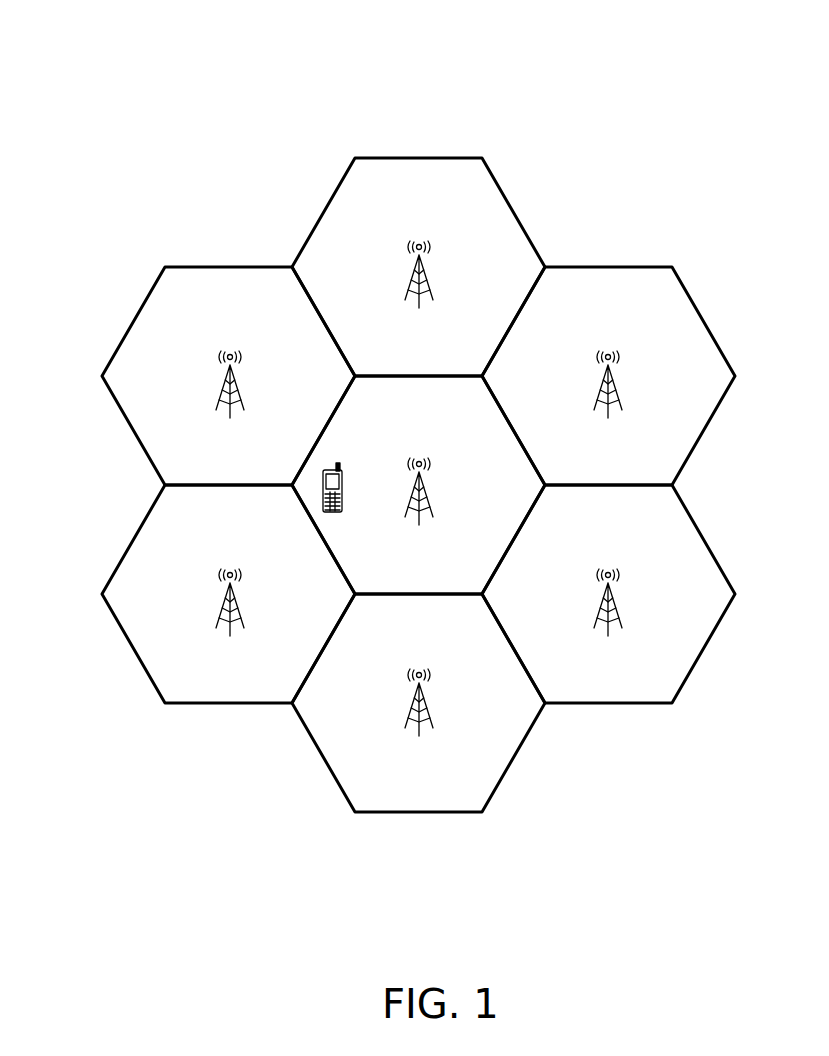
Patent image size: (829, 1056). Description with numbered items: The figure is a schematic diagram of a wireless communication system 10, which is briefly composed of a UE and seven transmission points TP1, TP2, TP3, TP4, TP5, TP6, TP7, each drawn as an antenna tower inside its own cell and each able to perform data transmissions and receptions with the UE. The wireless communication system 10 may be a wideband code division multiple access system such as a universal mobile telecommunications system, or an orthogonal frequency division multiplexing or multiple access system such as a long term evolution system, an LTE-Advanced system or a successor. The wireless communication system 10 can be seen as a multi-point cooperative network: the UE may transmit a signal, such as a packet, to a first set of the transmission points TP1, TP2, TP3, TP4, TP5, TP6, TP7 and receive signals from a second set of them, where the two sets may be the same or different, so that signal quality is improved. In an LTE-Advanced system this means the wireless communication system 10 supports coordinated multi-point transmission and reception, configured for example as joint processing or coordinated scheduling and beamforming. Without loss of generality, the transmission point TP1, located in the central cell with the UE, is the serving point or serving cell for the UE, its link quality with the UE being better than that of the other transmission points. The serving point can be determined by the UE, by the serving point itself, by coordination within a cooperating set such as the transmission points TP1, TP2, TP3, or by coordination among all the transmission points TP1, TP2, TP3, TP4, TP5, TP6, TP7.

The wireless communication system 10 is at (656, 82).
The transmission point TP1 is at (430, 505).
The transmission point TP2 is at (222, 383).
The transmission point TP3 is at (222, 612).
The transmission point TP4 is at (428, 713).
The transmission point TP5 is at (617, 600).
The transmission point TP6 is at (618, 382).
The transmission point TP7 is at (430, 273).
The element UE is at (349, 490).